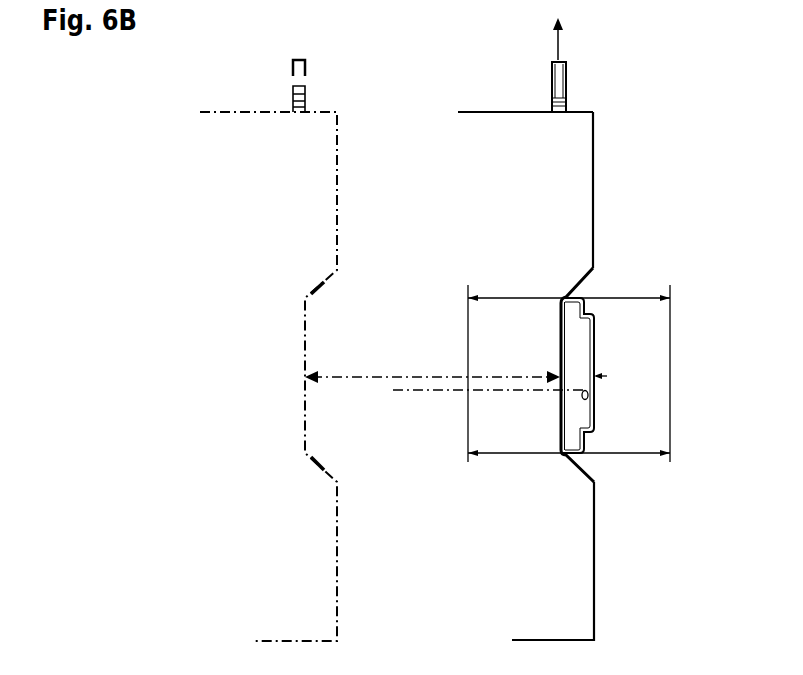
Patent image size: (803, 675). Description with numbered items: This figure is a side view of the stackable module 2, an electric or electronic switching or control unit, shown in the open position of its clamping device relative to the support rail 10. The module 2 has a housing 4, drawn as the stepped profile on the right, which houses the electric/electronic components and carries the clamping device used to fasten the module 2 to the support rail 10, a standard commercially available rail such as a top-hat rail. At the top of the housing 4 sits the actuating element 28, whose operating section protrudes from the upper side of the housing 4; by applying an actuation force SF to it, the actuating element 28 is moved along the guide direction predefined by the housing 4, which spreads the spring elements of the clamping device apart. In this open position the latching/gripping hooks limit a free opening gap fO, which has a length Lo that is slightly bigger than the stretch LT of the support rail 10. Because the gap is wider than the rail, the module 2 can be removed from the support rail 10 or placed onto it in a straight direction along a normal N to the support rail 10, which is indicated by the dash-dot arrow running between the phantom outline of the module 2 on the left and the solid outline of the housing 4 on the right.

The stackable module 2 is at (246, 108).
The housing 4 is at (565, 183).
The support rail 10 is at (593, 348).
The actuating element 28 is at (578, 111).
The actuation force SF is at (576, 39).
The stretch of the support rail LT is at (468, 358).
The length of the free opening gap Lo is at (670, 370).
The normal to the support rail N is at (400, 390).
The free opening gap fO is at (615, 375).